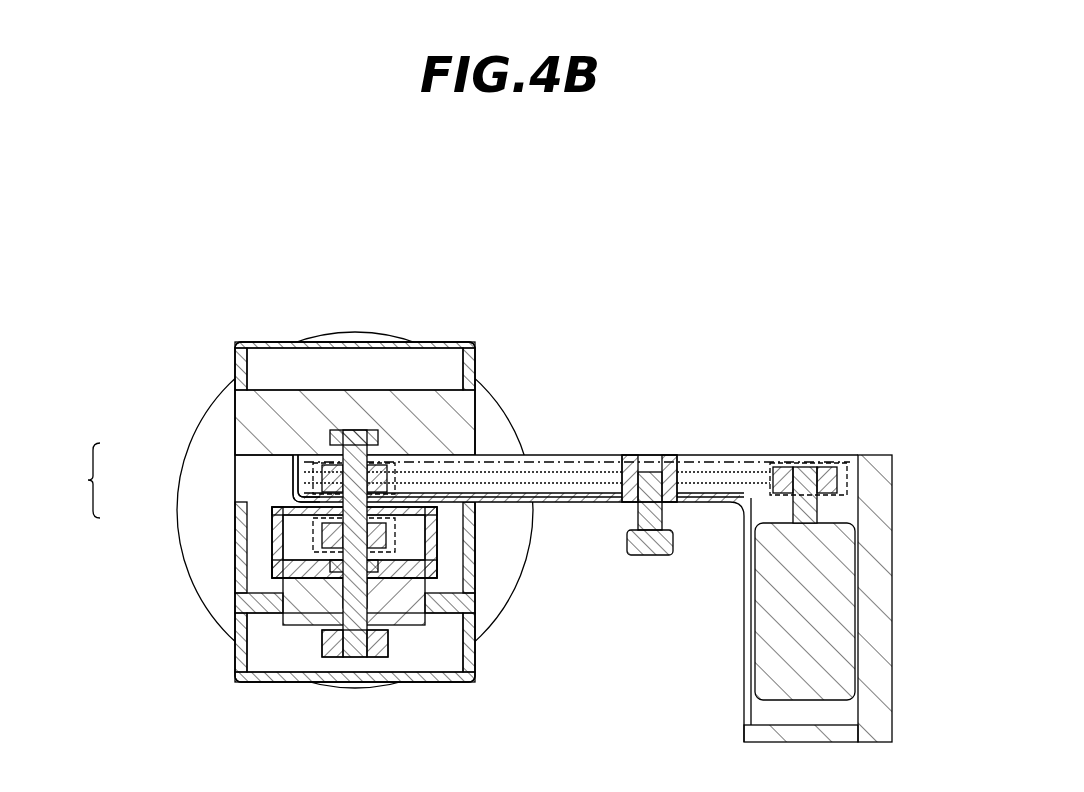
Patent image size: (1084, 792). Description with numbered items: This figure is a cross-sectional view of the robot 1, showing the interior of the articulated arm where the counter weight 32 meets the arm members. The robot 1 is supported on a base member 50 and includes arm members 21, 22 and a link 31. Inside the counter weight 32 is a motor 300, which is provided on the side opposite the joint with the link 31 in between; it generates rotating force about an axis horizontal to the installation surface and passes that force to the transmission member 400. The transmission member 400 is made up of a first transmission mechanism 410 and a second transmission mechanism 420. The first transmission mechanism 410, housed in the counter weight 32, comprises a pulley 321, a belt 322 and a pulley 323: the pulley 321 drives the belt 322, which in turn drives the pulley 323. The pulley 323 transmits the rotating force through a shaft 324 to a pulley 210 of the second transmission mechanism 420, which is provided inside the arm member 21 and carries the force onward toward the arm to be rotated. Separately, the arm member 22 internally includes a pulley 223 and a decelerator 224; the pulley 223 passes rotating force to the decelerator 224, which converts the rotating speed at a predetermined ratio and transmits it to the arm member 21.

The robot 1 is at (772, 292).
The arm member 21 is at (283, 567).
The arm member 22 is at (447, 683).
The link 31 is at (652, 556).
The counter weight 32 is at (893, 518).
The base member 50 is at (492, 595).
The pulley 210 is at (395, 535).
The pulley 223 is at (331, 657).
The decelerator 224 is at (293, 625).
The motor 300 is at (822, 653).
The pulley 321 is at (828, 468).
The belt 322 is at (601, 477).
The pulley 323 is at (300, 488).
The shaft 324 is at (356, 433).
The transmission member 400 is at (70, 480).
The first transmission mechanism 410 is at (318, 476).
The second transmission mechanism 420 is at (318, 538).